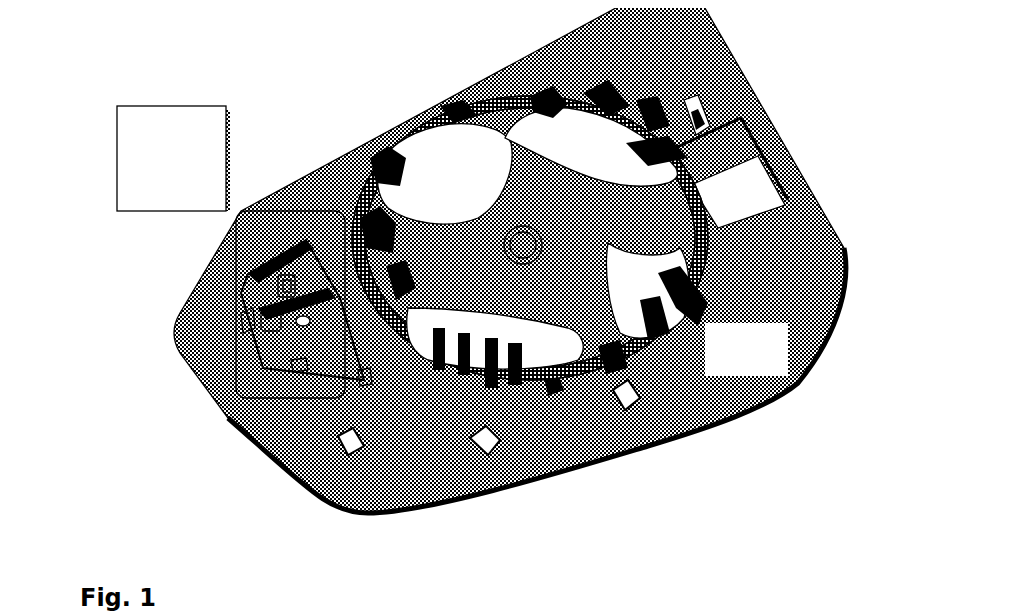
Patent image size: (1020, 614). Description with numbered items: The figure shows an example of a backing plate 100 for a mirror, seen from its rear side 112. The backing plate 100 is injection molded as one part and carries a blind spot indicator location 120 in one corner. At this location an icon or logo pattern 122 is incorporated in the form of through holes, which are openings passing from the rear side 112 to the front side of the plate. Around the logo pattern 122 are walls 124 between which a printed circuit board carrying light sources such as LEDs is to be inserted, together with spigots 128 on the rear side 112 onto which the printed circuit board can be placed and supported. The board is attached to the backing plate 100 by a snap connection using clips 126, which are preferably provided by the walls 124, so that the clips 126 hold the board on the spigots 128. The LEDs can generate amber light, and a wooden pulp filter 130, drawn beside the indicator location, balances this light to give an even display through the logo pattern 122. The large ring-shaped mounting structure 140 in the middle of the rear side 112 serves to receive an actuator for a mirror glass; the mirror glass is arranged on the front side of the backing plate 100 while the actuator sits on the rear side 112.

The backing plate 100 is at (786, 111).
The rear side 112 is at (758, 357).
The blind spot indicator location 120 is at (233, 383).
The logo pattern 122 is at (247, 289).
The walls 124 is at (356, 370).
The clips 126 is at (233, 312).
The spigots 128 is at (291, 356).
The wooden pulp filter 130 is at (109, 193).
The mounting structure 140 is at (470, 97).